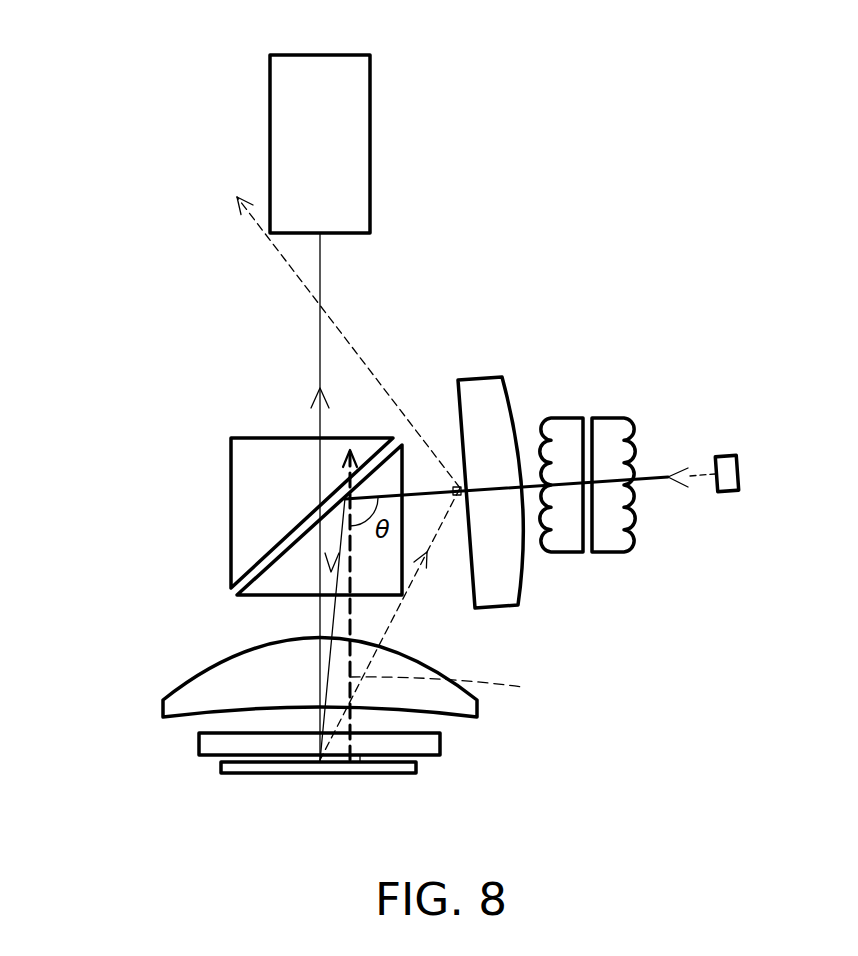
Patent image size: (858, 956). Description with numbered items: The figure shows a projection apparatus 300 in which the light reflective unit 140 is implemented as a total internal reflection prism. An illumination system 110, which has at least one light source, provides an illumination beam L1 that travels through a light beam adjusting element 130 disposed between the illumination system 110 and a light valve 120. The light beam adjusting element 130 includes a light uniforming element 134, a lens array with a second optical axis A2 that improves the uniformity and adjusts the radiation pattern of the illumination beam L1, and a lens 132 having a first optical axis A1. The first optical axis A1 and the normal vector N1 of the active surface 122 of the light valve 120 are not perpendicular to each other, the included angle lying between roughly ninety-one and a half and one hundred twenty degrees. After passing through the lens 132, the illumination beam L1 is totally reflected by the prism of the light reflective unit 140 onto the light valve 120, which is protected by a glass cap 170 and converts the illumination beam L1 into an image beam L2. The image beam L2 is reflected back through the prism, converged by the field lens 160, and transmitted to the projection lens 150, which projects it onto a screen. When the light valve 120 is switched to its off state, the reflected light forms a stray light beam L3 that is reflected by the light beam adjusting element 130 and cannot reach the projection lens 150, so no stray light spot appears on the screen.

The illumination system 110 is at (723, 456).
The light valve 120 is at (232, 770).
The active surface 122 is at (251, 748).
The light beam adjusting element 130 is at (554, 416).
The lens 132 is at (478, 375).
The light uniforming element 134 is at (603, 415).
The light reflective unit 140 is at (280, 577).
The projection lens 150 is at (270, 148).
The field lens 160 is at (380, 698).
The glass cap 170 is at (427, 745).
The projection apparatus 300 is at (677, 720).
The illumination beam L1 is at (325, 618).
The image beam L2 is at (320, 343).
The stray light beam L3 is at (413, 587).
The normal vector N1 is at (449, 608).
The first optical axis A1 is at (430, 494).
The second optical axis A2 is at (537, 486).